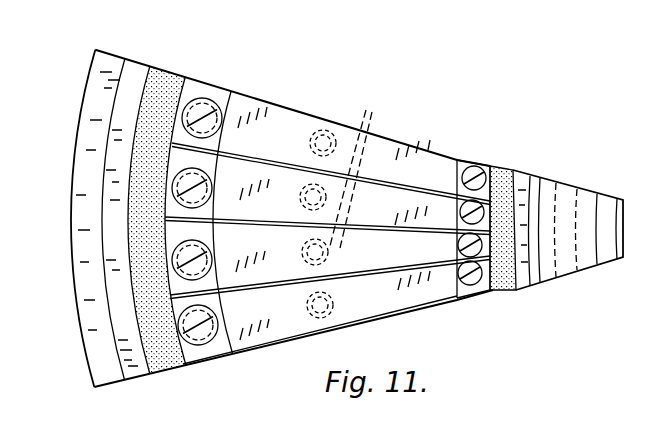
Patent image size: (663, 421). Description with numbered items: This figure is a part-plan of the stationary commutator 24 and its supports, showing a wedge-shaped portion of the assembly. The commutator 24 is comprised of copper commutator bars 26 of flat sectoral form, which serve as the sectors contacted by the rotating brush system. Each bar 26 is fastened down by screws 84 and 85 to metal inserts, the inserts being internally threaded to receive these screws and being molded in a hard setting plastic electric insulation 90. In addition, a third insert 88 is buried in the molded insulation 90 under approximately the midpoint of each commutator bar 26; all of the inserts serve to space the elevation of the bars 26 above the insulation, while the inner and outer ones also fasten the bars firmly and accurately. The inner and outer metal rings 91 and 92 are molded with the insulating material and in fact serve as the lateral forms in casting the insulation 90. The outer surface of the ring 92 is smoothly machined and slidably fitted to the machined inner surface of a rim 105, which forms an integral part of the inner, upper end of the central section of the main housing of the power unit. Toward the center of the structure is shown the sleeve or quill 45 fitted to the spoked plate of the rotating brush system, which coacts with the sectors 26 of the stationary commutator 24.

The stationary commutator 24 is at (413, 158).
The commutator bars 26 is at (294, 222).
The sleeve or quill 45 is at (568, 193).
The fastening screws 84 is at (487, 232).
The fastening screws 85 is at (197, 173).
The third insert 88 is at (318, 250).
The molded electric insulation 90 is at (161, 80).
The inner metal ring 91 is at (527, 272).
The outer metal ring 92 is at (108, 184).
The rim 105 is at (90, 354).